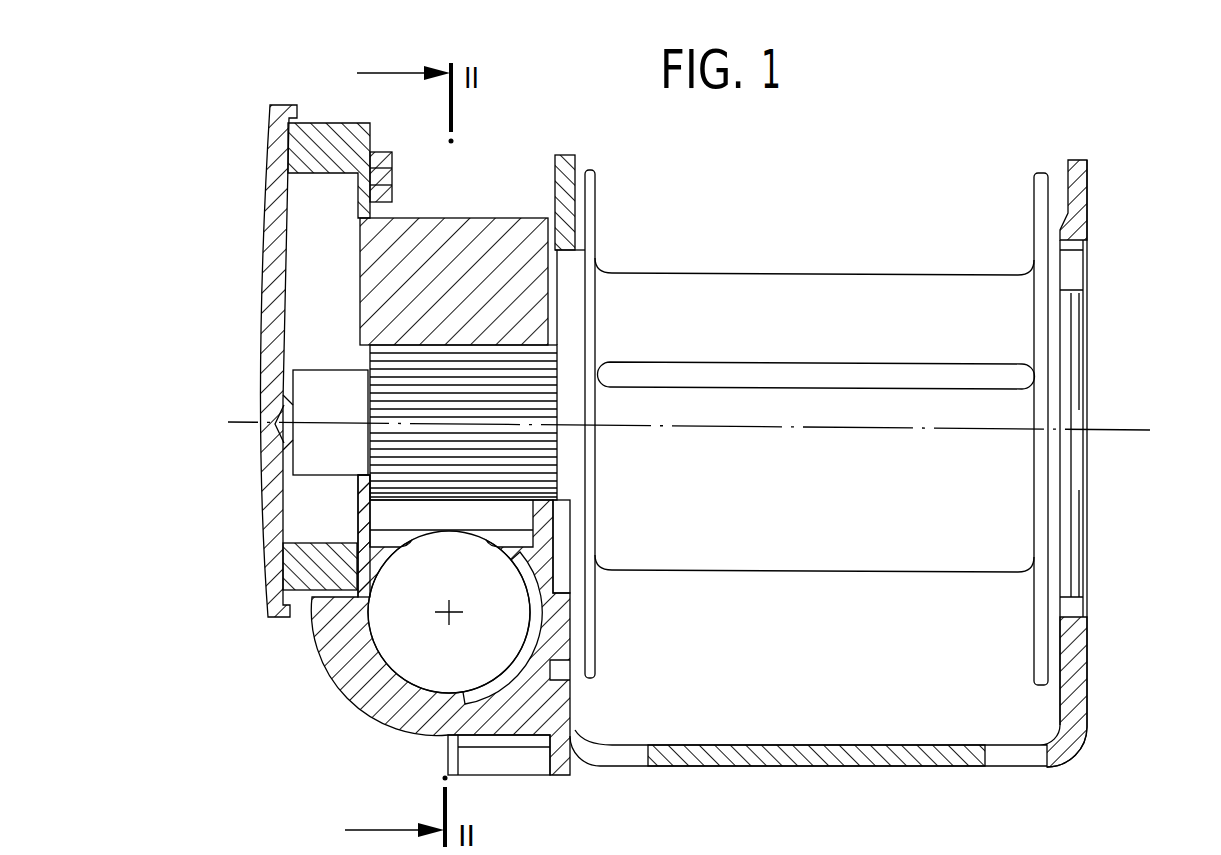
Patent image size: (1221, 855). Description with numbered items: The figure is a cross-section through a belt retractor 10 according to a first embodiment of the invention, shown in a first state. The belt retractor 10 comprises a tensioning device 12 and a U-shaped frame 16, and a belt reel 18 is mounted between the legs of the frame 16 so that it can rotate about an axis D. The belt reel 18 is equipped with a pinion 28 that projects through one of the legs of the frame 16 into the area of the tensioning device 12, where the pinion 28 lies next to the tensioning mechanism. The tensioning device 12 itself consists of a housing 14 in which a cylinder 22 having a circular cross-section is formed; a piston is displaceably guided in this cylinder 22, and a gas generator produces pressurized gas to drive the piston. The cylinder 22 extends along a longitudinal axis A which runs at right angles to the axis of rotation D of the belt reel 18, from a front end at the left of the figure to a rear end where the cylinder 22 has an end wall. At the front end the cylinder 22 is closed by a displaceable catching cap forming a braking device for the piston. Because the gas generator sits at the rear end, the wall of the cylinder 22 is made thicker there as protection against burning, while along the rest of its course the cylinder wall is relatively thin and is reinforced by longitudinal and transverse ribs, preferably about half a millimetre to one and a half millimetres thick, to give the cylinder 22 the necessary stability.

The belt retractor 10 is at (1138, 682).
The tensioning device 12 is at (249, 514).
The housing 14 is at (392, 695).
The U-shaped frame 16 is at (852, 762).
The belt reel 18 is at (850, 300).
The cylinder 22 is at (386, 613).
The pinion 28 is at (461, 362).
The longitudinal axis A is at (452, 616).
The axis of rotation D is at (1132, 432).